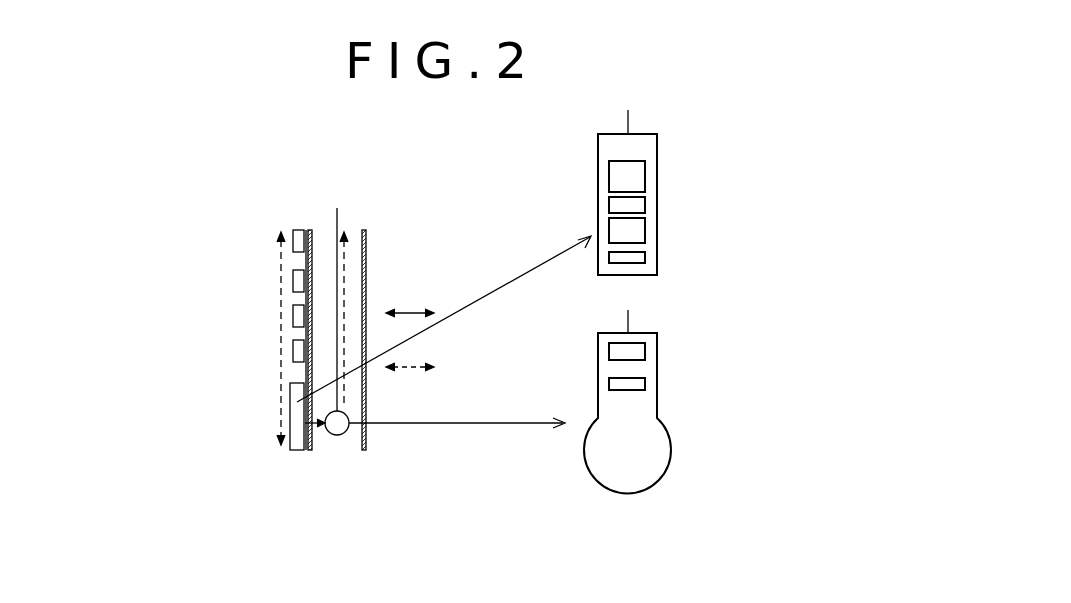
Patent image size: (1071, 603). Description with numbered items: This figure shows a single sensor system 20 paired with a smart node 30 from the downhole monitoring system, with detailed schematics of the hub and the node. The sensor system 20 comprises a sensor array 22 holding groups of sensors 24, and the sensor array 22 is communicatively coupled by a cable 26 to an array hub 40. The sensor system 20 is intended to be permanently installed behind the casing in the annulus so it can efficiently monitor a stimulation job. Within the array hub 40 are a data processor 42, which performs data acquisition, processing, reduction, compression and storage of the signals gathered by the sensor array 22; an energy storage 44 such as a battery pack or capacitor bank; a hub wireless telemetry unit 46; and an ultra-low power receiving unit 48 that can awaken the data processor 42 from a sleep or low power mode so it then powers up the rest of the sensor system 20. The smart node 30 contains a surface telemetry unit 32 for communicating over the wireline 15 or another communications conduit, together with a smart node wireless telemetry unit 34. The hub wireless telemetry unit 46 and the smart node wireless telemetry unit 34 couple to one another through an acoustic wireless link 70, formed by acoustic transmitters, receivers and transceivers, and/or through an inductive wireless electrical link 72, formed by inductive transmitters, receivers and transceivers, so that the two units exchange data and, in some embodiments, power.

The wireline 15 is at (337, 214).
The sensor system 20 is at (175, 232).
The sensor array 22 is at (225, 232).
The sensors 24 is at (293, 247).
The cable 26 is at (300, 372).
The smart node 30 is at (338, 446).
The surface telemetry unit 32 is at (640, 351).
The smart node wireless telemetry unit 34 is at (640, 382).
The array hub 40 is at (284, 457).
The data processor 42 is at (640, 175).
The energy storage 44 is at (640, 205).
The hub wireless telemetry unit 46 is at (640, 230).
The ultra-low power receiving unit 48 is at (640, 256).
The acoustic wireless link 70 is at (473, 324).
The wireless electrical link 72 is at (477, 378).